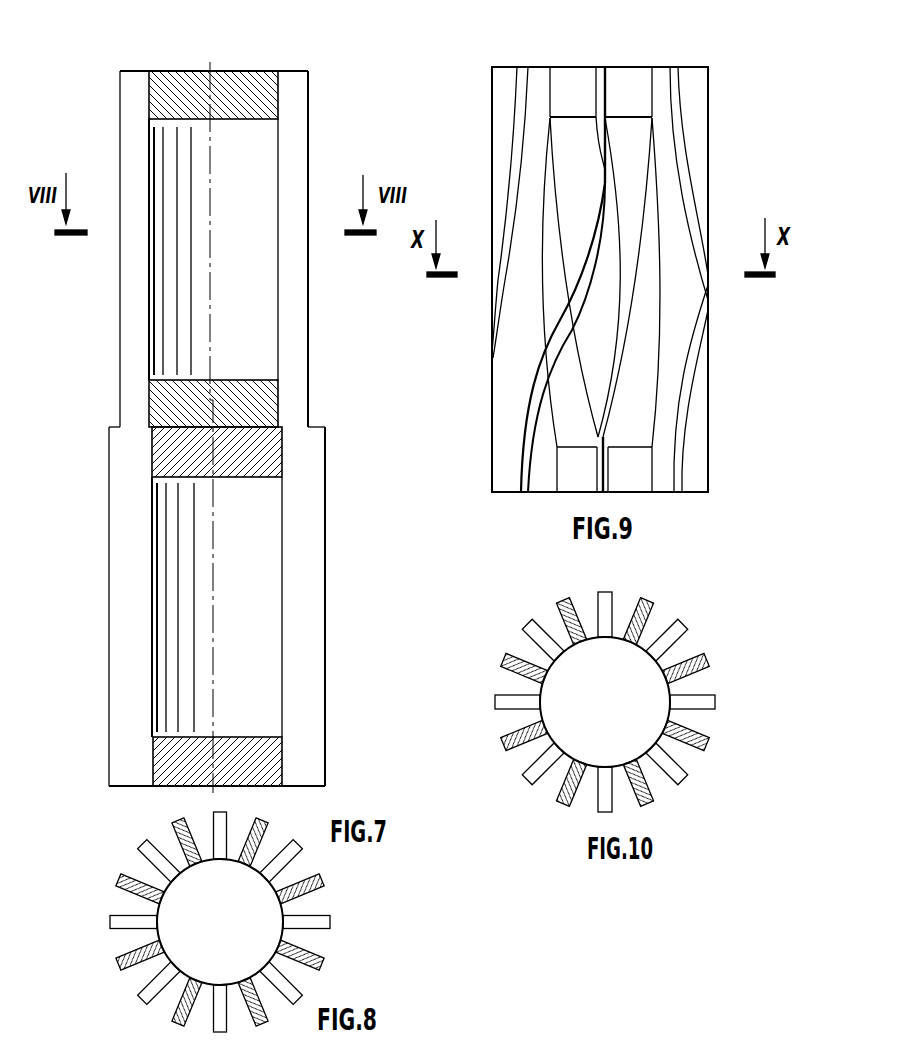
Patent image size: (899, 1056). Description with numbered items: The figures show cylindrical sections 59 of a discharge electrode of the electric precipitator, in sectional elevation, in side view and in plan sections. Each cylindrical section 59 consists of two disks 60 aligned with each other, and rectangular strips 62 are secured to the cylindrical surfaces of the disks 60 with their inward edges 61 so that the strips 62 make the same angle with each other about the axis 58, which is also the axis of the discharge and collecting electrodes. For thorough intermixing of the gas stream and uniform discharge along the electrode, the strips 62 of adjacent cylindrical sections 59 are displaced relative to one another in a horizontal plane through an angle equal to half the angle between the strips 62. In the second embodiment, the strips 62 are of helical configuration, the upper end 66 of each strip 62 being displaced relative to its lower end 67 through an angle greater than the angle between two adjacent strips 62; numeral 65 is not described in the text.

In FIG. 7, the axis 58 is at (212, 194).
In FIG. 7, the cylindrical section 59 is at (189, 66).
In FIG. 9, the cylindrical section 59 is at (632, 63).
In FIG. 7, the disk 60 is at (247, 79).
In FIG. 8, the disk 60 is at (303, 907).
In FIG. 9, the disk 60 is at (642, 77).
In FIG. 10, the disk 60 is at (667, 660).
In FIG. 7, the inward edge 61 is at (155, 273).
In FIG. 8, the inward edge 61 is at (290, 838).
In FIG. 9, the inward edge 61 is at (555, 145).
In FIG. 7, the rectangular strip 62 is at (130, 104).
In FIG. 8, the rectangular strip 62 is at (263, 828).
In FIG. 9, the rectangular strip 62 is at (642, 260).
In FIG. 10, the rectangular strip 62 is at (703, 657).
In FIG. 7, the housing wall / hatched fin 65 is at (122, 285).
In FIG. 8, the housing wall / hatched fin 65 is at (320, 962).
In FIG. 9, the housing wall / hatched fin 65 is at (688, 388).
In FIG. 10, the housing wall / hatched fin 65 is at (705, 743).
In FIG. 9, the upper end 66 is at (508, 67).
In FIG. 9, the lower end 67 is at (515, 493).